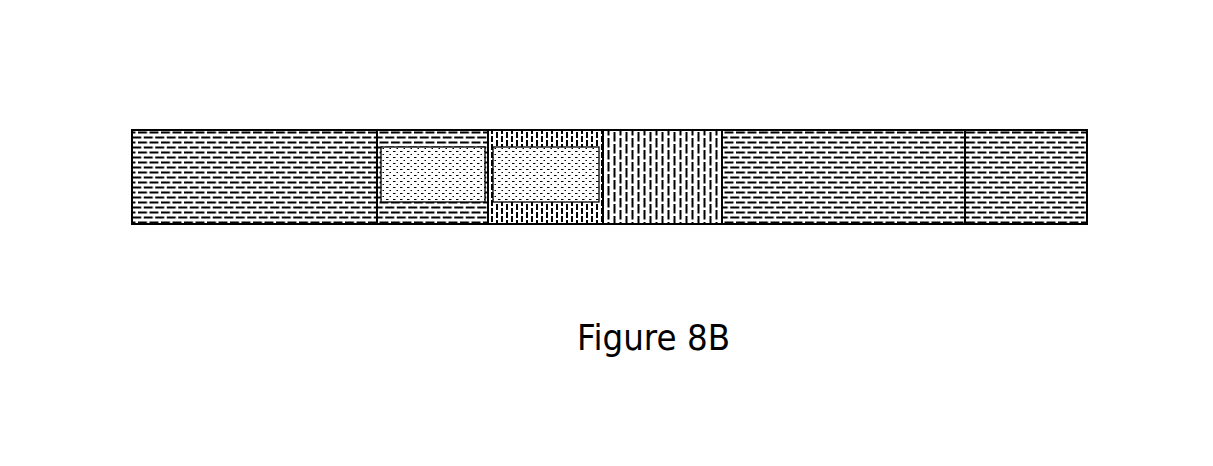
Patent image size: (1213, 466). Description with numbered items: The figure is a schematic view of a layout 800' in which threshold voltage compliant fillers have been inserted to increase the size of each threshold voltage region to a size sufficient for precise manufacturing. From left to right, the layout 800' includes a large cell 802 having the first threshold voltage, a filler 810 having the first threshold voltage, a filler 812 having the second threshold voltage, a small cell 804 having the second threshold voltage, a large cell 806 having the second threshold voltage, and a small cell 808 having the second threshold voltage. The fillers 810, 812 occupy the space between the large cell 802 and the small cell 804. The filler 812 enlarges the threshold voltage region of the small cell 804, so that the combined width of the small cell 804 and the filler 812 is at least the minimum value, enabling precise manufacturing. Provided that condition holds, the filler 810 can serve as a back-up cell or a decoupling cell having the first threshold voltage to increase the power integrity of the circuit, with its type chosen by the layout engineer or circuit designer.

The layout 800' is at (656, 112).
The large cell 802 is at (245, 130).
The small cell 804 is at (647, 130).
The large cell 806 is at (827, 130).
The small cell 808 is at (1027, 130).
The filler 810 is at (426, 130).
The filler 812 is at (542, 130).